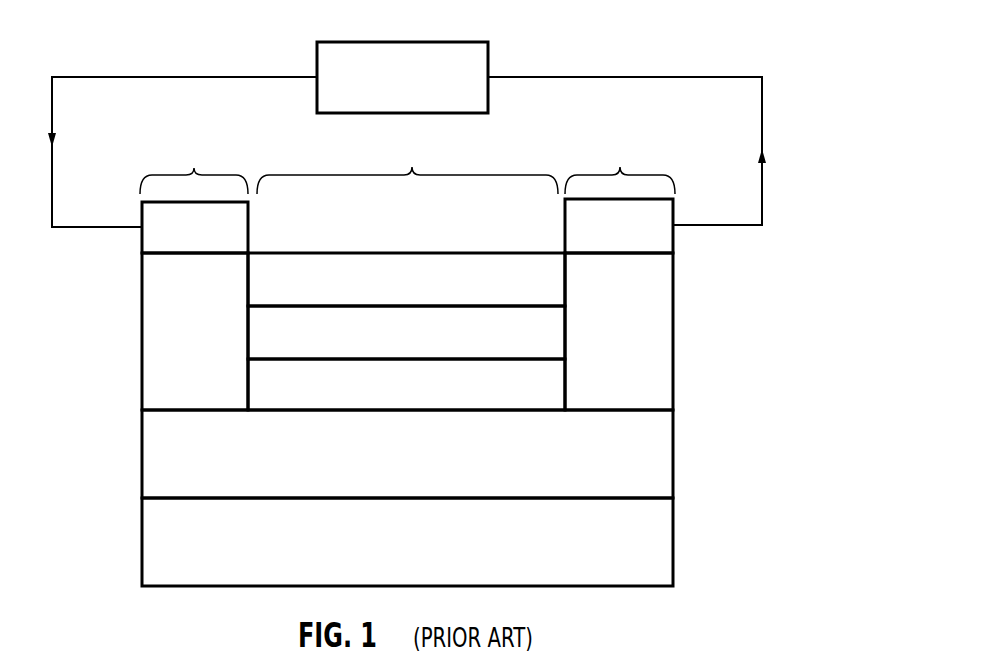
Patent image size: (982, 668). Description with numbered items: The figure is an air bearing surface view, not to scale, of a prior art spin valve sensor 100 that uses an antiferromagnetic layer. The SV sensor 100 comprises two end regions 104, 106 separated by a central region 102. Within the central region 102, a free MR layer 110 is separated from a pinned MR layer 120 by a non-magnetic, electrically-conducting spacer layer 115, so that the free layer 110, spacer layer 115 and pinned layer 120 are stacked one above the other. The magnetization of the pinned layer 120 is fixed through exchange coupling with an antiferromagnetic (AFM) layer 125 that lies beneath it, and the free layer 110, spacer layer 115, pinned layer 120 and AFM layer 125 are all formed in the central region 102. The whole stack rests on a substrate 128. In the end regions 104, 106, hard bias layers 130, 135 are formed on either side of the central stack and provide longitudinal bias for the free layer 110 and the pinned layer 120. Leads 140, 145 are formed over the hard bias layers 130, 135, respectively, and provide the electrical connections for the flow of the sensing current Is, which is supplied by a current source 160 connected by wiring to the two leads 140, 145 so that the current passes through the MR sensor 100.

The SV sensor 100 is at (107, 595).
The central region 102 is at (407, 166).
The end region 104 is at (194, 166).
The end region 106 is at (620, 166).
The free layer 110 is at (273, 273).
The spacer layer 115 is at (273, 327).
The pinned layer 120 is at (273, 377).
The antiferromagnetic (AFM) layer 125 is at (273, 430).
The substrate 128 is at (663, 533).
The hard bias layer 130 is at (168, 280).
The hard bias layer 135 is at (663, 305).
The lead 140 is at (233, 232).
The lead 145 is at (582, 230).
The current source 160 is at (433, 42).